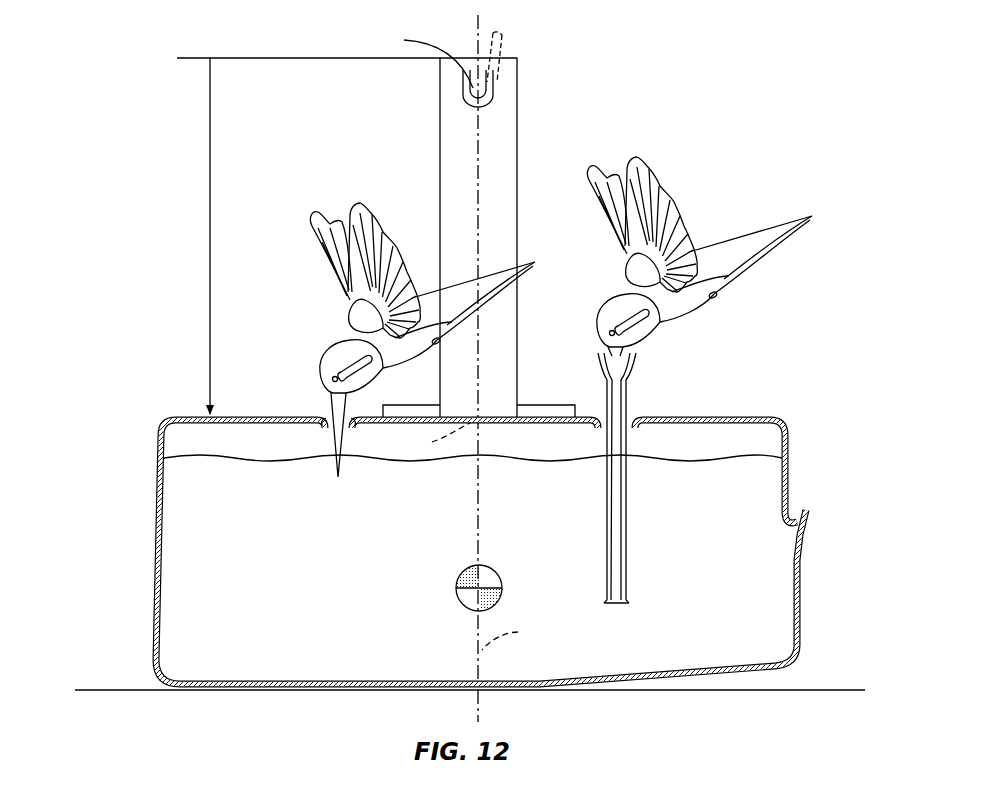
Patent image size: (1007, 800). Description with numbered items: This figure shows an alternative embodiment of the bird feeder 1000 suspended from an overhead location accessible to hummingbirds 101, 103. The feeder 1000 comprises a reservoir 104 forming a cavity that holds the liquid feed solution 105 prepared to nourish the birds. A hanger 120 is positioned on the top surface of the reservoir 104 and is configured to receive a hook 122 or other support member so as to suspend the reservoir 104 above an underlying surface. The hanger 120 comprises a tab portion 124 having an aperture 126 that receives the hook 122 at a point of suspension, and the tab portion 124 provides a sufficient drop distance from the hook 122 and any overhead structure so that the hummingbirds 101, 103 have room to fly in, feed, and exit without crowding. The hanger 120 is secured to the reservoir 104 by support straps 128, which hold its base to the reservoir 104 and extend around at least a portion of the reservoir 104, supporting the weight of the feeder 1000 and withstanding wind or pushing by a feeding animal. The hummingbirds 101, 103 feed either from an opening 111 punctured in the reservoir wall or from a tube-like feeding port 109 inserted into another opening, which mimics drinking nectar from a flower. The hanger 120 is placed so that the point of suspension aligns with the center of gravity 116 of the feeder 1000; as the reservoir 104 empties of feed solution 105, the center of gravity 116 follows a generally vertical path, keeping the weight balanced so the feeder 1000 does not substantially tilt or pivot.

The bird feeder 1000 is at (476, 368).
The hummingbird 101 is at (310, 256).
The hummingbird 103 is at (672, 193).
The reservoir 104 is at (140, 508).
The feed solution 105 is at (215, 463).
The feeding port 109 is at (625, 556).
The opening 111 is at (328, 418).
The center of gravity 116 is at (455, 592).
The hanger 120 is at (440, 221).
The hook 122 is at (507, 58).
The tab portion 124 is at (440, 168).
The aperture 126 is at (462, 98).
The support straps 128 is at (412, 403).